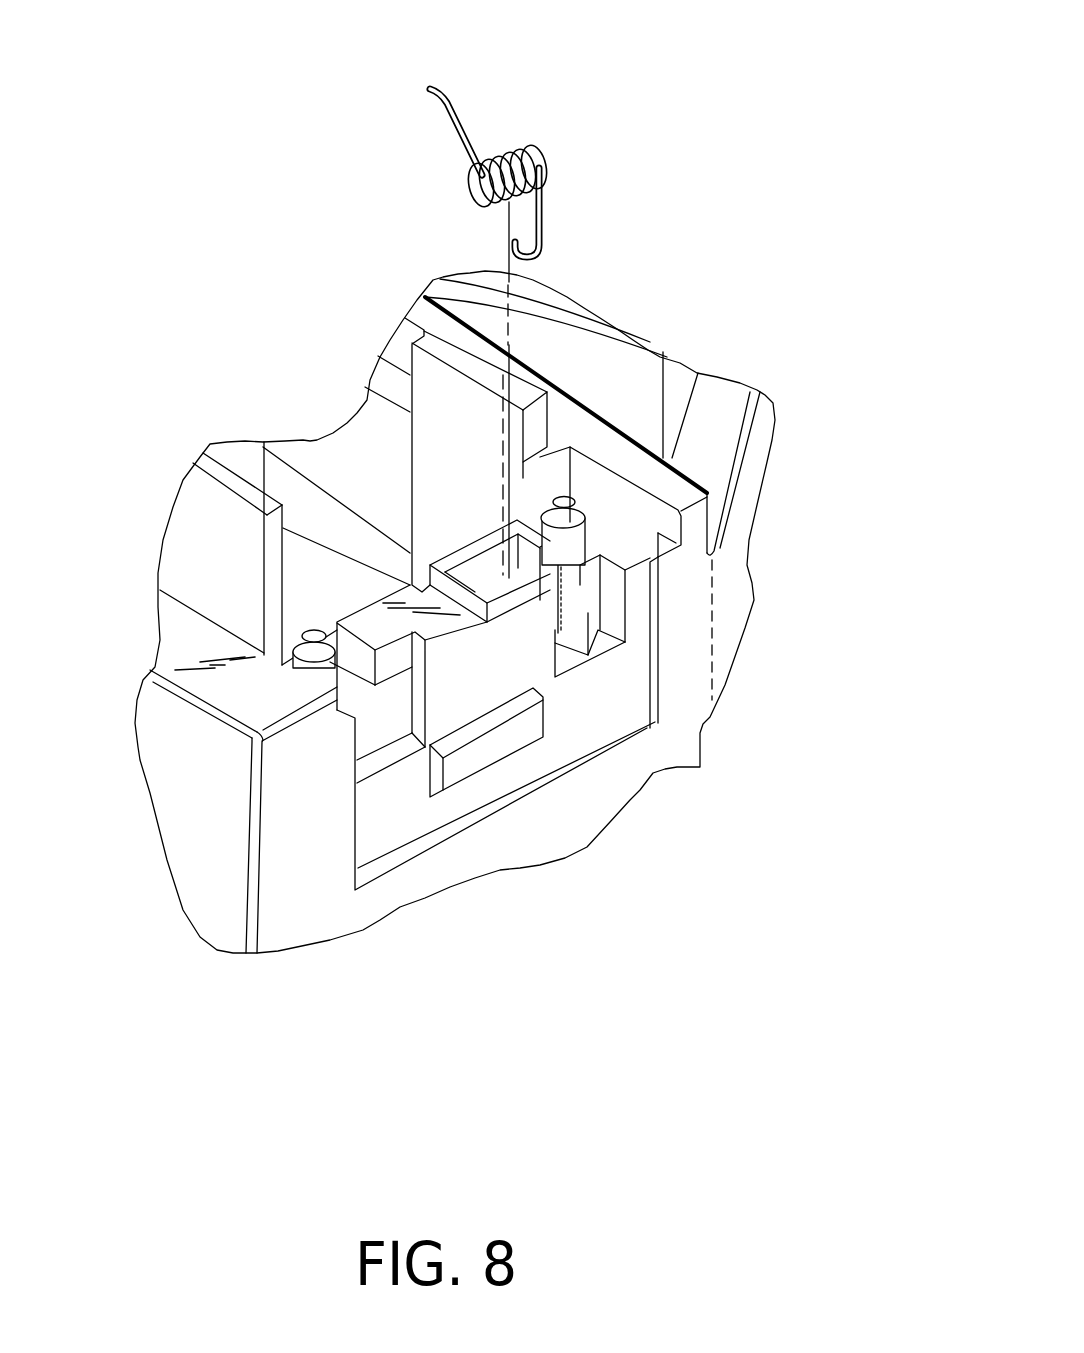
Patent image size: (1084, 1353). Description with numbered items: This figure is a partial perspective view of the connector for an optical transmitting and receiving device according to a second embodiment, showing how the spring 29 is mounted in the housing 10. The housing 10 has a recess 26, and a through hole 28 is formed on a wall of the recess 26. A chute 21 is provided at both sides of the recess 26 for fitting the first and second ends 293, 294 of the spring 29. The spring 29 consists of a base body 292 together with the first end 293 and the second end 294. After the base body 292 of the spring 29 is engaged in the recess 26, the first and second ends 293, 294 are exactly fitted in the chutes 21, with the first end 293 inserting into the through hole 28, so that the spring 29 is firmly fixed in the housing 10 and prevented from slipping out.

The housing 10 is at (562, 808).
The chute 21 is at (310, 482).
The recess 26 is at (410, 499).
The through hole 28 is at (560, 641).
The spring 29 is at (559, 129).
The base body 292 is at (507, 143).
The first end 293 is at (538, 220).
The second end 294 is at (465, 125).